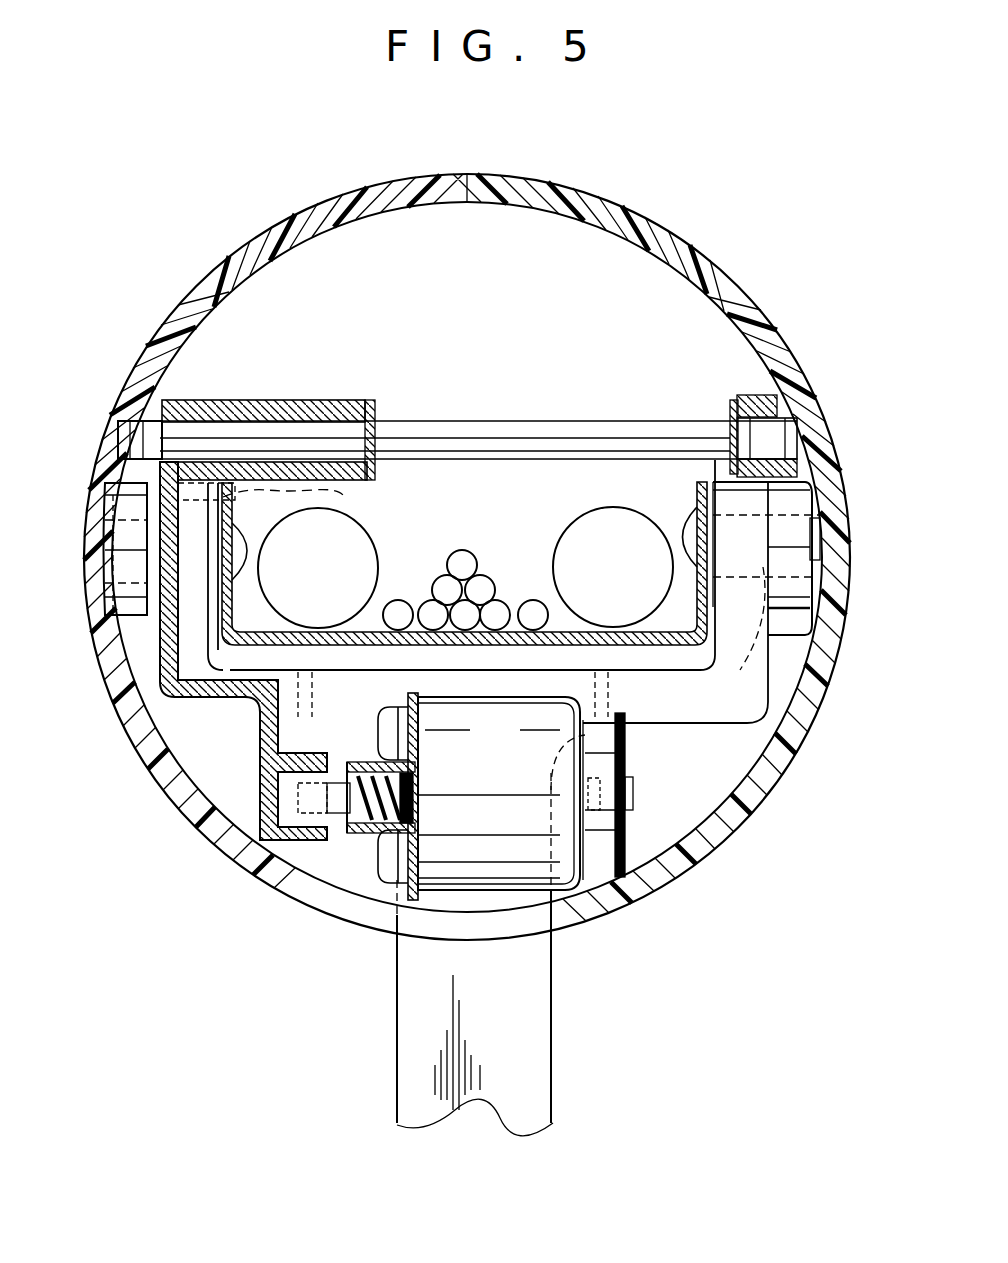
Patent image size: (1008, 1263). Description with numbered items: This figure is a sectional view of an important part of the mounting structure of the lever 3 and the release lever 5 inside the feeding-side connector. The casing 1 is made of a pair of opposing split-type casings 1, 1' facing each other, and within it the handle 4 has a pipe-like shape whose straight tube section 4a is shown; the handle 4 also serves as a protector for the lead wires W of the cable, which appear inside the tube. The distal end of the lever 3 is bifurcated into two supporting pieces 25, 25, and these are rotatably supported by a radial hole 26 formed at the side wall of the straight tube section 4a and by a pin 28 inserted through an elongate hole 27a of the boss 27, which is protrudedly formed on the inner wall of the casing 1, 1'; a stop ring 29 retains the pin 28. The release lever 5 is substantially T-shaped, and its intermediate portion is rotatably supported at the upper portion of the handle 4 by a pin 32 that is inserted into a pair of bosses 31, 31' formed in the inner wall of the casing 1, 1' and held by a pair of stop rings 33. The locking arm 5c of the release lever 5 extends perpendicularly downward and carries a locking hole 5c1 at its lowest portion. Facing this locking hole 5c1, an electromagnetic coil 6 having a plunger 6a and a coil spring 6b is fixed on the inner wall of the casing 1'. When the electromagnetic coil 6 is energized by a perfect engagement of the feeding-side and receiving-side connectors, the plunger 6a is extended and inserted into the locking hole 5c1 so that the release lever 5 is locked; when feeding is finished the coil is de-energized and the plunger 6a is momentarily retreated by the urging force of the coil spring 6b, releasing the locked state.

The casing 1 is at (467, 557).
The split-type casing 1' is at (467, 538).
The lever 3 is at (540, 1057).
The handle 4 is at (247, 645).
The straight tube section 4a is at (627, 643).
The release lever 5 is at (262, 400).
The locking arm 5c is at (157, 665).
The locking hole 5c1 is at (300, 800).
The electromagnetic coil 6 is at (573, 890).
The plunger 6a is at (347, 822).
The coil spring 6b is at (345, 805).
The supporting piece 25 is at (838, 408).
The radial hole 26 is at (688, 522).
The boss 27 is at (145, 607).
The elongate hole 27a is at (738, 638).
The pin 28 is at (812, 668).
The stop ring 29 is at (705, 590).
The boss 31 is at (122, 390).
The boss 31' is at (791, 398).
The pin 32 is at (593, 430).
The stop ring 33 is at (375, 407).
The lead wire W is at (447, 590).